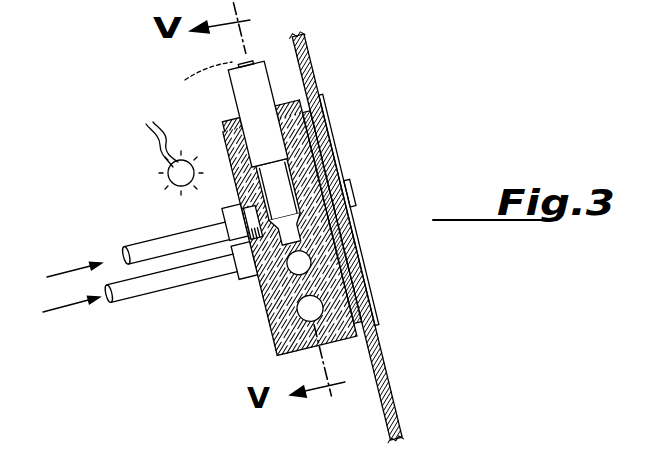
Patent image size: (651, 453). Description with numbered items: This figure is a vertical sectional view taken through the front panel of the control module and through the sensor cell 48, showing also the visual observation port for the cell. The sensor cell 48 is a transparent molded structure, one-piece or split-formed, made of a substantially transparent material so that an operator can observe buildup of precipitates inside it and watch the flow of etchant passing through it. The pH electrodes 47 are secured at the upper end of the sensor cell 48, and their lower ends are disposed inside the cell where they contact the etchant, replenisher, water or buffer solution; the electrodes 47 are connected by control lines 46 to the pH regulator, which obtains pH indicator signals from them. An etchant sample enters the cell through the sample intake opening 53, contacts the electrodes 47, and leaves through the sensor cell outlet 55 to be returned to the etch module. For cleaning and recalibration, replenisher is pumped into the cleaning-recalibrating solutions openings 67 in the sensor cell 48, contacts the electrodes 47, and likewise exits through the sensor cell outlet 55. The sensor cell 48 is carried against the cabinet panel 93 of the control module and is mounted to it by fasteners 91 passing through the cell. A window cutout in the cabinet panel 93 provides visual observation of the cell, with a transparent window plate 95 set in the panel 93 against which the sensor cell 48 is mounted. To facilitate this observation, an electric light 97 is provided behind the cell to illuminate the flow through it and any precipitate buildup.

The control lines 46 is at (243, 63).
The pH electrodes 47 is at (271, 79).
The sensor cell 48 is at (330, 153).
The sample intake opening 53 is at (343, 297).
The sensor cell outlet 55 is at (286, 285).
The cleaning-recalibrating solutions openings 67 is at (222, 208).
The fasteners 91 is at (348, 185).
The cabinet panel 93 is at (313, 92).
The transparent window plate 95 is at (350, 243).
The electric light 97 is at (178, 174).